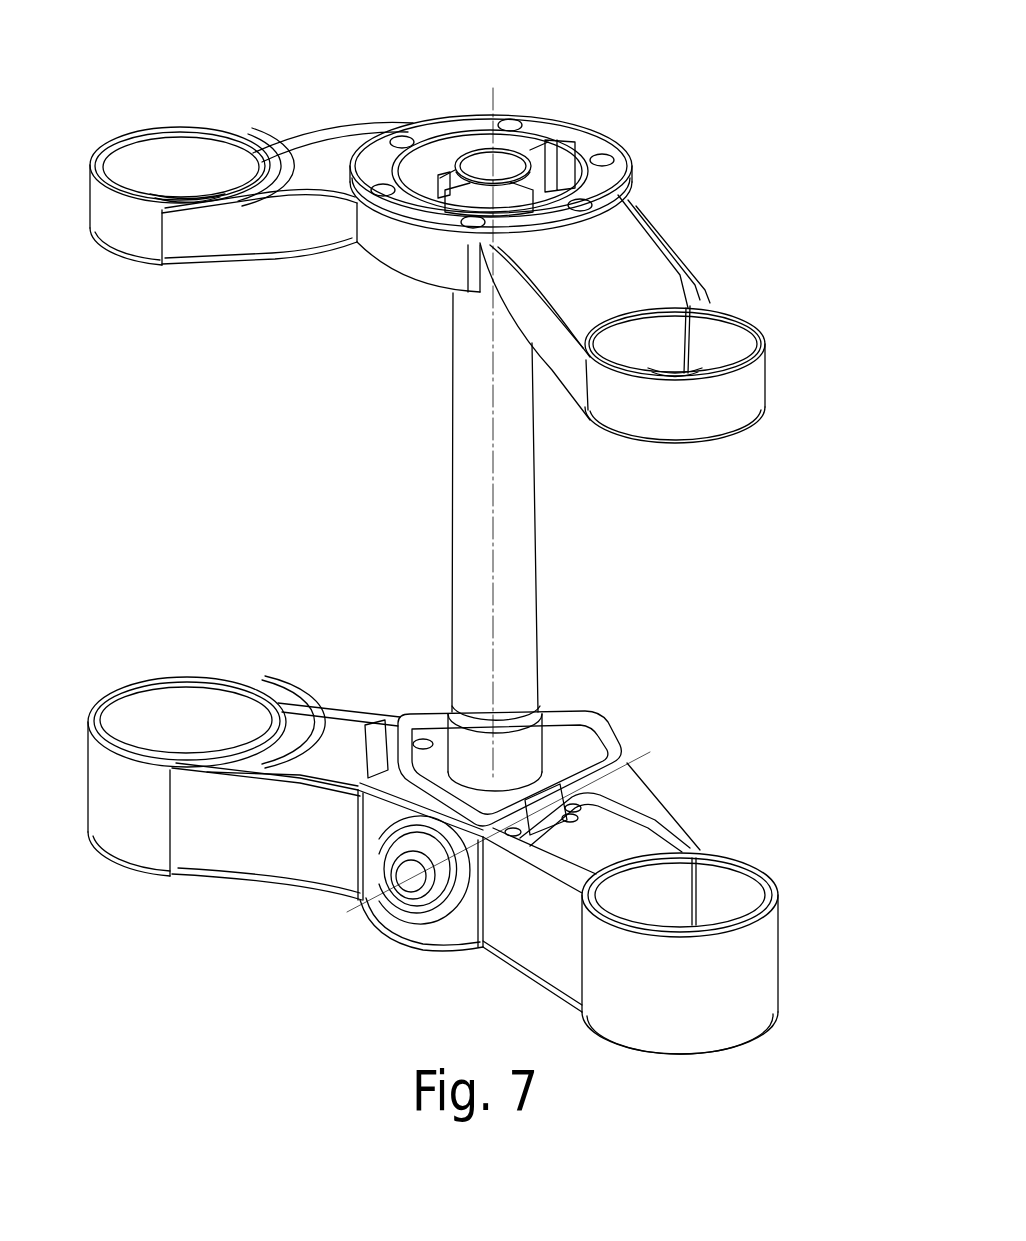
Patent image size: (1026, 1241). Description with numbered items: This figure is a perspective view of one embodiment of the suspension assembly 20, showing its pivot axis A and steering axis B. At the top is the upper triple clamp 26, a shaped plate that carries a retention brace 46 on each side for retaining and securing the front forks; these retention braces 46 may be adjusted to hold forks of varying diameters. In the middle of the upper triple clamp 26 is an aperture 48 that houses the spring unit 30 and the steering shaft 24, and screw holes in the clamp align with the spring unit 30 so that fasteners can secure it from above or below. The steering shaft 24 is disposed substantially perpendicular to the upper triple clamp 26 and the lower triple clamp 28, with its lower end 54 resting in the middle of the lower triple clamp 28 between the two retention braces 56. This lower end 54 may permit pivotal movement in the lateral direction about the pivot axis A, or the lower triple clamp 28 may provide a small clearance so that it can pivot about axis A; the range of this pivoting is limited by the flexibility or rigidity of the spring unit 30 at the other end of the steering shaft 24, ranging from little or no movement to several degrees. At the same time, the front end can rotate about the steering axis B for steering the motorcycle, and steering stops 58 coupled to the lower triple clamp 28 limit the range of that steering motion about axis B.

The suspension assembly 20 is at (748, 72).
The steering shaft 24 is at (527, 550).
The upper triple clamp 26 is at (333, 158).
The lower triple clamp 28 is at (335, 745).
The spring unit 30 is at (576, 158).
The retention braces 46 is at (152, 165).
The aperture 48 is at (469, 92).
The lower end 54 is at (556, 760).
The retention braces 56 is at (153, 708).
The steering stops 58 is at (378, 730).
The pivot axis A is at (475, 843).
The steering axis B is at (490, 357).